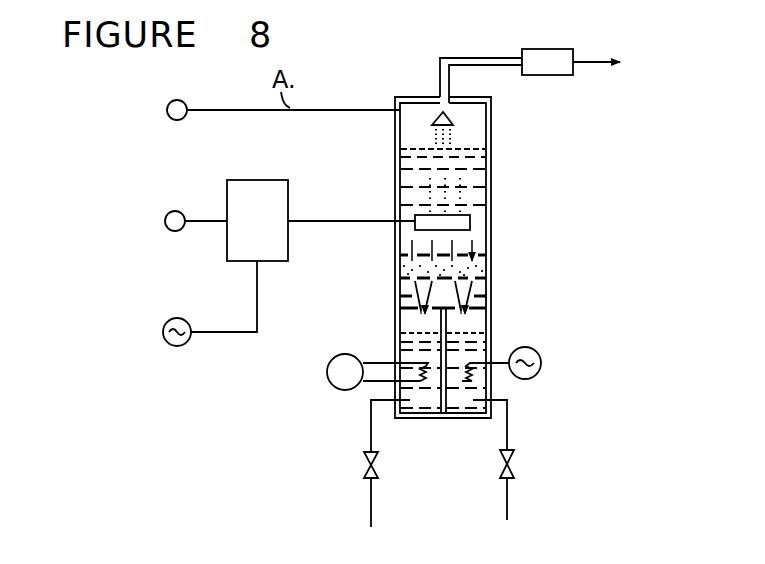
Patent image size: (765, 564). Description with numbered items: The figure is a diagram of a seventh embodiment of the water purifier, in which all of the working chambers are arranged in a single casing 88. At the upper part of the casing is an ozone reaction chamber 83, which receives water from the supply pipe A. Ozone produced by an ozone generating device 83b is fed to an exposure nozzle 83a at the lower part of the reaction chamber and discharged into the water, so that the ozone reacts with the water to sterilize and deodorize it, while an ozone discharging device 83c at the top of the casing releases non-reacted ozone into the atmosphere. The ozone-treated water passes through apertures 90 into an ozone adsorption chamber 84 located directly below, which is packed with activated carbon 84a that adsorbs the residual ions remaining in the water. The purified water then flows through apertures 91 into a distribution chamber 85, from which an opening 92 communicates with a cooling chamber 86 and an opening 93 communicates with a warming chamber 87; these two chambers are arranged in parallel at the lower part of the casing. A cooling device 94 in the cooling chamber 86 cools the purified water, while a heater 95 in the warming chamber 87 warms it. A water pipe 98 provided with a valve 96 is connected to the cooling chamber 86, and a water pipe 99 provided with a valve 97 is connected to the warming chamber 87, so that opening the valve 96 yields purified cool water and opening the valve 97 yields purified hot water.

The ozone reaction chamber 83 is at (394, 171).
The exposure nozzle 83a is at (455, 222).
The ozone generating device 83b is at (282, 230).
The ozone discharging device 83c is at (537, 49).
The ozone adsorption chamber 84 is at (394, 267).
The activated carbon 84a is at (476, 270).
The distribution chamber 85 is at (394, 310).
The cooling chamber 86 is at (417, 421).
The warming chamber 87 is at (463, 421).
The casing 88 is at (412, 97).
The apertures 90 is at (480, 252).
The apertures 91 is at (481, 278).
The opening 92 is at (417, 295).
The opening 93 is at (470, 296).
The cooling device 94 is at (423, 368).
The heater 95 is at (464, 368).
The valve 96 is at (363, 458).
The valve 97 is at (509, 466).
The water pipe 98 is at (371, 498).
The water pipe 99 is at (507, 500).